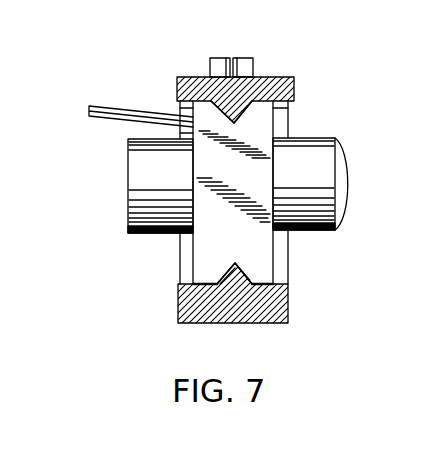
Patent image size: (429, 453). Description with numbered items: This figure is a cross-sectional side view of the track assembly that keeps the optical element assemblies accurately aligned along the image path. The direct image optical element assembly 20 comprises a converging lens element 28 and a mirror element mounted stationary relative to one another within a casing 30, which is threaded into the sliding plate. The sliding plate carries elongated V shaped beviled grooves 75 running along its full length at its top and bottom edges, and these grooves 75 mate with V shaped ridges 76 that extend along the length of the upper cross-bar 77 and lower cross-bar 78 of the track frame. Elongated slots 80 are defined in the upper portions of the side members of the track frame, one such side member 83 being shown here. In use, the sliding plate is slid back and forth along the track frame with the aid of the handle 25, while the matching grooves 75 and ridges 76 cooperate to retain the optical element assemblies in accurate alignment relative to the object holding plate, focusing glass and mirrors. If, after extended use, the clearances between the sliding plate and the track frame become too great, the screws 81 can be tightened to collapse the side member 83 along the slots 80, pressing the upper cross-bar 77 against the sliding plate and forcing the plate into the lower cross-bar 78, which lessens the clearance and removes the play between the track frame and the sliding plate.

The direct image optical element assembly 20 is at (122, 167).
The handle 25 is at (89, 108).
The converging lens element 28 is at (347, 208).
The casing 30 is at (313, 147).
The V shaped beviled grooves 75 is at (214, 112).
The V shaped ridges 76 is at (229, 118).
The upper cross-bar 77 is at (178, 90).
The lower cross-bar 78 is at (178, 310).
The elongated slots 80 is at (293, 107).
The screws 81 is at (242, 57).
The side member 83 is at (192, 258).